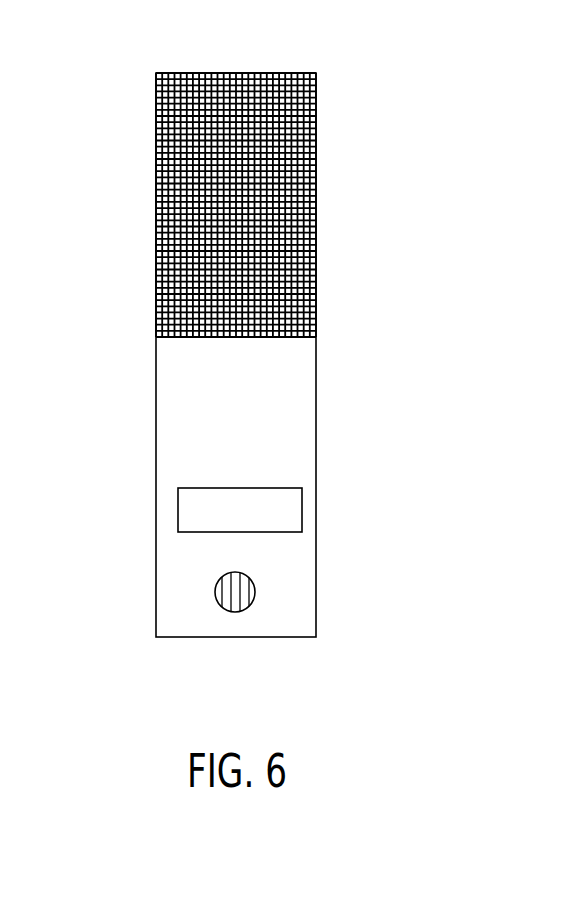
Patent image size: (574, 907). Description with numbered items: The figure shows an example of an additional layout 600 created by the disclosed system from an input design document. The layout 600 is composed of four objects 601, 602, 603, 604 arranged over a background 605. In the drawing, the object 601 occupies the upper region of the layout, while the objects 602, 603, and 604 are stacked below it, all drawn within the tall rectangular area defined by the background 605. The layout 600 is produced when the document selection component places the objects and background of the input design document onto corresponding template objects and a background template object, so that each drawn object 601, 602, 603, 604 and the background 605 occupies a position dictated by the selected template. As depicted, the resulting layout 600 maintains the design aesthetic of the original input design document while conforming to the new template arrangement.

The layout 600 is at (157, 72).
The object 601 is at (197, 215).
The object 602 is at (297, 432).
The object 603 is at (293, 510).
The object 604 is at (258, 588).
The background 605 is at (263, 630).